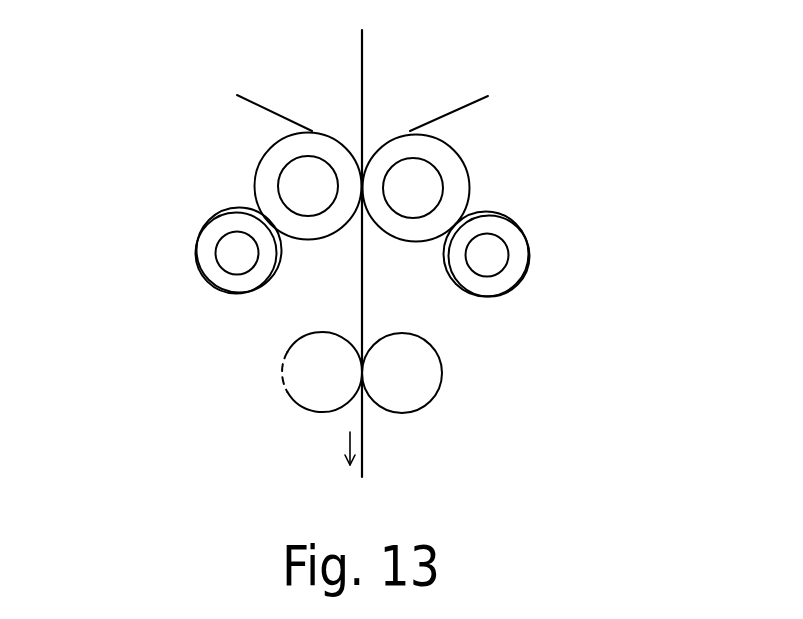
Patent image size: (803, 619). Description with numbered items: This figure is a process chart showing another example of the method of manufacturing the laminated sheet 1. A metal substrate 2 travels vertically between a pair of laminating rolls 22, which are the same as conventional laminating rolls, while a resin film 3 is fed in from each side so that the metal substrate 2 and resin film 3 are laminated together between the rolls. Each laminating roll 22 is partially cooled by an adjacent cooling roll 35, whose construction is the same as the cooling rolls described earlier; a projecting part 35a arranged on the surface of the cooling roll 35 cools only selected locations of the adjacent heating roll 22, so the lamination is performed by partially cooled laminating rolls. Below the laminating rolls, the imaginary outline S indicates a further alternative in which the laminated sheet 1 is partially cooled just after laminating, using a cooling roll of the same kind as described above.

The laminated sheet 1 is at (362, 303).
The metal substrate 2 is at (362, 67).
The resin film 3 is at (257, 104).
The laminating roll 22 is at (268, 167).
The cooling roll 35 is at (213, 273).
The projecting part 35a is at (233, 206).
The imaginary outline S is at (410, 377).